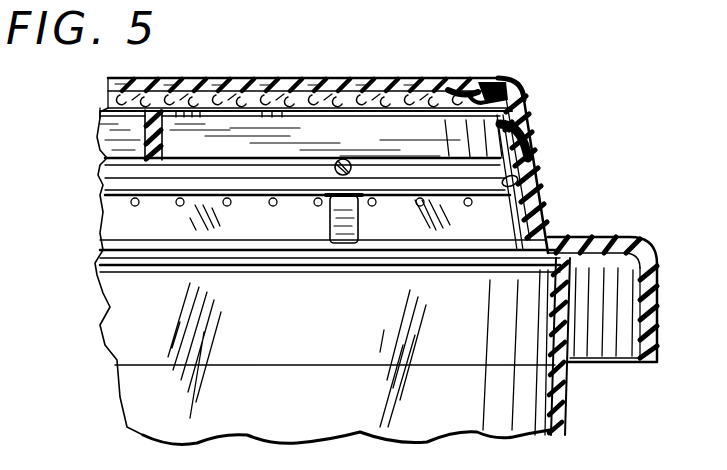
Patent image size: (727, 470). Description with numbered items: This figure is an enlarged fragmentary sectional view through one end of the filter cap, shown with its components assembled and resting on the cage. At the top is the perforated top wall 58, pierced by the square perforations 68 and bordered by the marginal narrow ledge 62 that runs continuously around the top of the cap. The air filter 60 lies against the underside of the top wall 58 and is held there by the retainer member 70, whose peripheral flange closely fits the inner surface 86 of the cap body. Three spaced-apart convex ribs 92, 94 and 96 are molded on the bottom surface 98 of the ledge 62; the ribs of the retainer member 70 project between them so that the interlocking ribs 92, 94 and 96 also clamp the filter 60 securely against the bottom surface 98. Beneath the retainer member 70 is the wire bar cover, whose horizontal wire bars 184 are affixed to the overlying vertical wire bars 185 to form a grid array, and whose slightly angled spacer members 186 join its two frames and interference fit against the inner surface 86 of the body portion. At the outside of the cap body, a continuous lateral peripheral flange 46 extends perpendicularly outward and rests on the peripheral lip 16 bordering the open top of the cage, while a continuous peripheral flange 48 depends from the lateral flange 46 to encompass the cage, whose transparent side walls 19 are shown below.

The perforated top wall 58 is at (349, 60).
The air filter 60 is at (207, 100).
The perforations 68 is at (252, 94).
The bottom surface 98 is at (371, 98).
The rib 92 is at (455, 82).
The rib 94 is at (472, 94).
The ledge 62 is at (484, 92).
The rib 96 is at (516, 82).
The retainer member 70 is at (522, 135).
The inner surface 86 is at (537, 230).
The lateral peripheral flange 46 is at (623, 240).
The peripheral flange 48 is at (655, 290).
The peripheral lip 16 is at (603, 340).
The side walls 19 is at (552, 400).
The horizontal wire bars 184 is at (147, 205).
The vertical wire bars 185 is at (276, 202).
The spacer members 186 is at (360, 220).